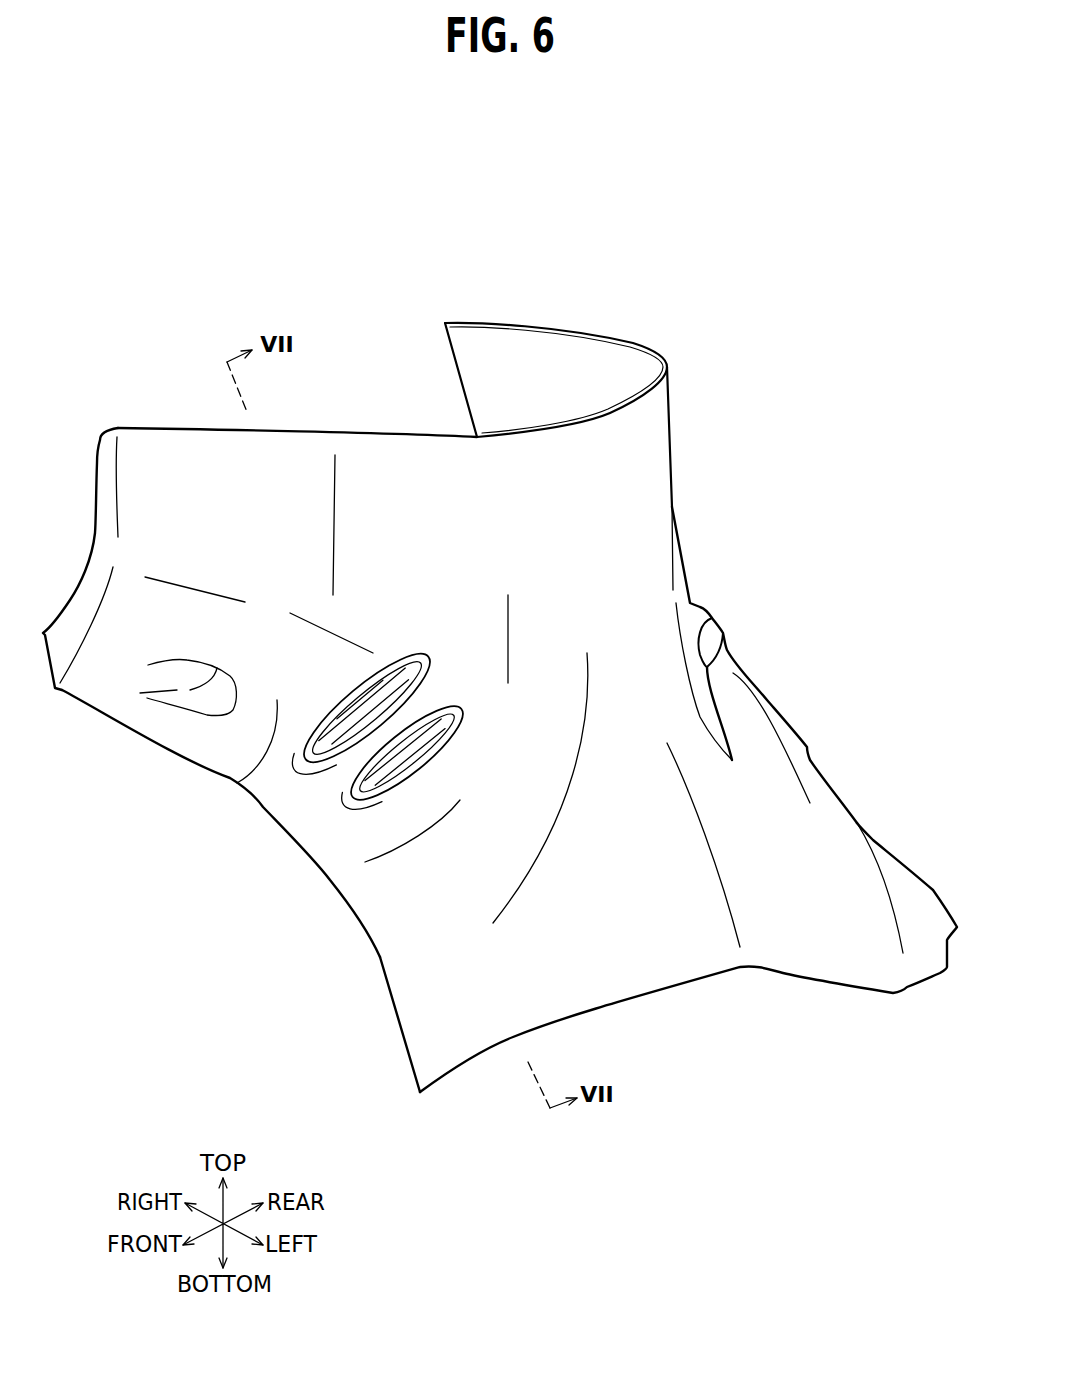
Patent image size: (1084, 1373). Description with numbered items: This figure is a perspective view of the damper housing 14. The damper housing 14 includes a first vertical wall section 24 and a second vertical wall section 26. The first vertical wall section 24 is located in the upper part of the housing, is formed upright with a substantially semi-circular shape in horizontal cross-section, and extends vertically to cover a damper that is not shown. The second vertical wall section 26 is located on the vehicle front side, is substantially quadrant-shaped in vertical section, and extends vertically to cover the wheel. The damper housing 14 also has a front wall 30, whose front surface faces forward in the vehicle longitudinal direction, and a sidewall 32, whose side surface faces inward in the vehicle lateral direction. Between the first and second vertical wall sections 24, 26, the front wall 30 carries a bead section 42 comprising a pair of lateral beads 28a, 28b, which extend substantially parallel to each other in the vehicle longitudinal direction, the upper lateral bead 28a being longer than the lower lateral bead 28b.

The damper housing 14 is at (653, 260).
The first vertical wall section 24 is at (675, 437).
The second vertical wall section 26 is at (348, 978).
The upper lateral bead 28a is at (360, 715).
The lower lateral bead 28b is at (403, 752).
The front wall 30 is at (230, 783).
The sidewall 32 is at (760, 695).
The bead section 42 is at (442, 675).